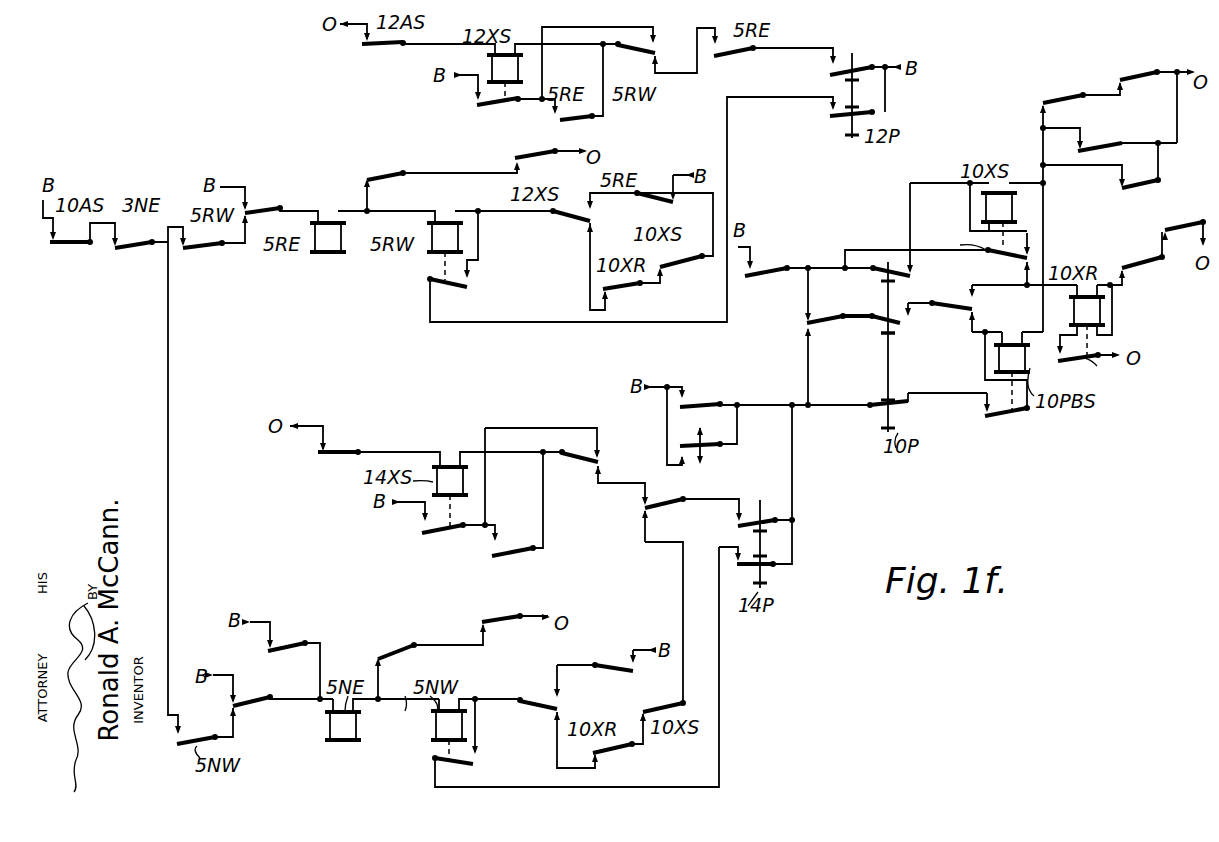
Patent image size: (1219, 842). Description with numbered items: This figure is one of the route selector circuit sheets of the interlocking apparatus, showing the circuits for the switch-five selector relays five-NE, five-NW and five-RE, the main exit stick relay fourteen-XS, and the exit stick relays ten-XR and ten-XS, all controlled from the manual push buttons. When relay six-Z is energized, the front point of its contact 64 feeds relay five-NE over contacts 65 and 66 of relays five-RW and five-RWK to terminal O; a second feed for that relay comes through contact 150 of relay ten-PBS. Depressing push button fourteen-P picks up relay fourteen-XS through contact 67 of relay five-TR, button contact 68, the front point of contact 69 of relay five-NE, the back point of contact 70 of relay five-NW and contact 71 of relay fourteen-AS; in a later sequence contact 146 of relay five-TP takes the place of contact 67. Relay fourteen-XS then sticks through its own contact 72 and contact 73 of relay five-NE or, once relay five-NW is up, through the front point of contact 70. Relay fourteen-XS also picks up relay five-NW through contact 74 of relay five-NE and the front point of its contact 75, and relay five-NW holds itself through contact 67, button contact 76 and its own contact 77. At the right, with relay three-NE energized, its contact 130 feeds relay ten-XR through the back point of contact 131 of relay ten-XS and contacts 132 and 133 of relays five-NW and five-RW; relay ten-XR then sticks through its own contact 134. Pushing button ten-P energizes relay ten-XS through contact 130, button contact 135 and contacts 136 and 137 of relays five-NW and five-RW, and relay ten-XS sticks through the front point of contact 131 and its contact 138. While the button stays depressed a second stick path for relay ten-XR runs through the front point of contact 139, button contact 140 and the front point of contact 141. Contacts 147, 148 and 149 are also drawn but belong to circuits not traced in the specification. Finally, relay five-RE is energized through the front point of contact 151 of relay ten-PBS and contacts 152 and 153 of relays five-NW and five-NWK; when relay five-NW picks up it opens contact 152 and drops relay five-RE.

The contact of relay 10PBS 151 is at (302, 194).
The contact of relay 5NW 152 is at (403, 161).
The contact of relay 5NWK 153 is at (536, 143).
The contact of relay 3NE 130 is at (792, 250).
The contact of relay 10XS 131 is at (973, 244).
The contact of relay 5NW 132 is at (1130, 250).
The contact of relay 5RW 133 is at (1165, 226).
The contact of relay 10XR 134 is at (1095, 369).
The contact of push button 10P 135 is at (945, 303).
The contact of relay 5NW 136 is at (1058, 98).
The contact of relay 5RW 137 is at (1138, 74).
The contact of relay 10XS 138 is at (1124, 196).
The contact of relay 10XR 139 is at (806, 322).
The contact of push button 10P 140 is at (888, 333).
The contact of relay 10XR 141 is at (942, 276).
The contact of relay 5TP 146 is at (731, 458).
The relay contact 147 is at (905, 405).
The relay contact 148 is at (1002, 414).
The push button switch contact 10PBS- 149 is at (1097, 146).
The contact of relay 10PBS 150 is at (288, 645).
The contact of relay 6Z 64 is at (265, 688).
The contact of relay 5RW 65 is at (422, 660).
The contact of relay 5RWK 66 is at (520, 607).
The contact of relay 5TR 67 is at (721, 393).
The contact of push button 14P 68 is at (738, 524).
The contact of relay 5NE 69 is at (686, 493).
The contact of relay 5NW 70 is at (582, 465).
The contact of relay 14AS 71 is at (350, 452).
The contact of relay 14XS 72 is at (422, 531).
The contact of relay 5NE 73 is at (526, 565).
The contact of relay 5NE 74 is at (615, 667).
The contact of relay 14XS 75 is at (553, 708).
The contact of push button 14P 76 is at (768, 566).
The contact of relay 5NW 77 is at (473, 762).